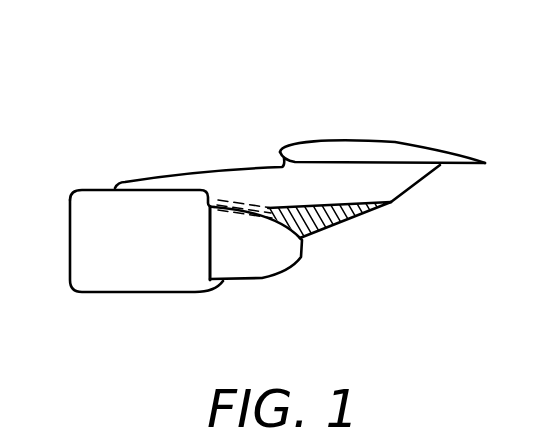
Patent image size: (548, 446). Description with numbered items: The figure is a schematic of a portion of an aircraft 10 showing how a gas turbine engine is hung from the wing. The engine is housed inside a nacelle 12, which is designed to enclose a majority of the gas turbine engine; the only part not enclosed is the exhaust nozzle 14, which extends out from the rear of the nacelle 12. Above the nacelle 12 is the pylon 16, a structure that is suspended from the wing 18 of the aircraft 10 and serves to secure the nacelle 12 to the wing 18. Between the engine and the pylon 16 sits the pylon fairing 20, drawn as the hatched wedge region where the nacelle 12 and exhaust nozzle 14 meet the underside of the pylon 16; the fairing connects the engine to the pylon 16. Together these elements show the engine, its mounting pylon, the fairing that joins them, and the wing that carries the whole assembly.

The aircraft 10 is at (68, 124).
The nacelle 12 is at (134, 277).
The exhaust nozzle 14 is at (258, 267).
The pylon 16 is at (423, 173).
The wing 18 is at (395, 142).
The pylon fairing 20 is at (333, 218).